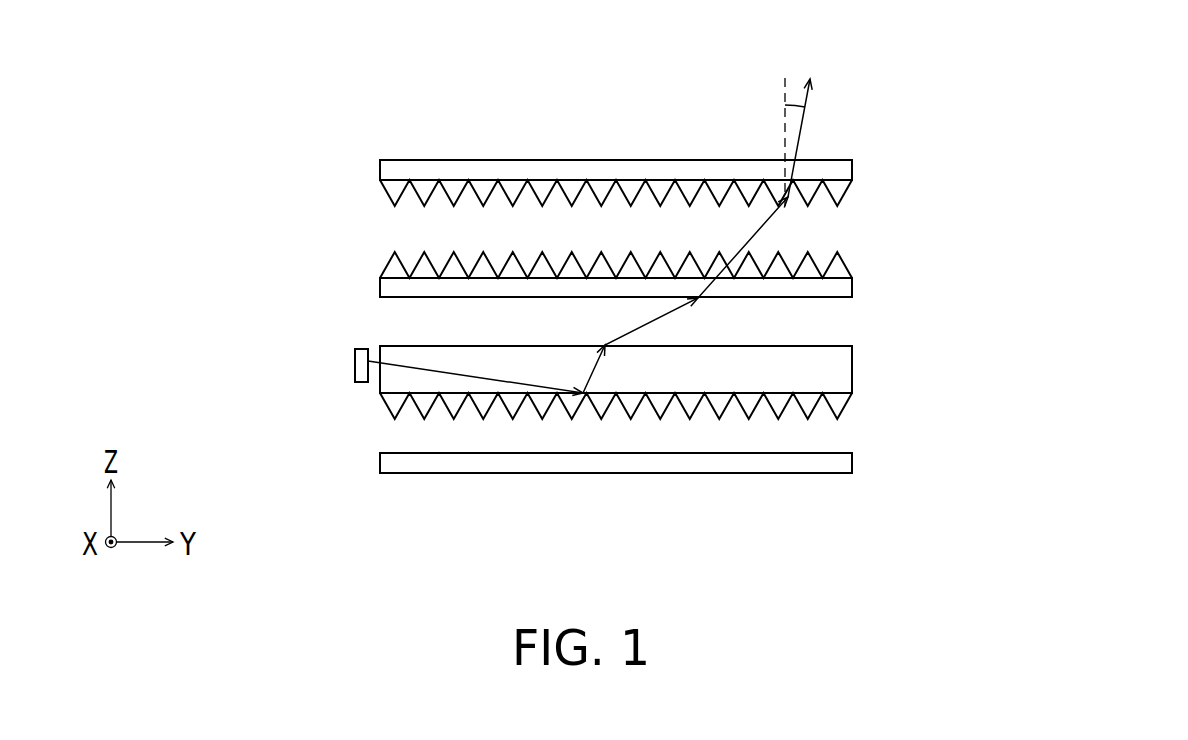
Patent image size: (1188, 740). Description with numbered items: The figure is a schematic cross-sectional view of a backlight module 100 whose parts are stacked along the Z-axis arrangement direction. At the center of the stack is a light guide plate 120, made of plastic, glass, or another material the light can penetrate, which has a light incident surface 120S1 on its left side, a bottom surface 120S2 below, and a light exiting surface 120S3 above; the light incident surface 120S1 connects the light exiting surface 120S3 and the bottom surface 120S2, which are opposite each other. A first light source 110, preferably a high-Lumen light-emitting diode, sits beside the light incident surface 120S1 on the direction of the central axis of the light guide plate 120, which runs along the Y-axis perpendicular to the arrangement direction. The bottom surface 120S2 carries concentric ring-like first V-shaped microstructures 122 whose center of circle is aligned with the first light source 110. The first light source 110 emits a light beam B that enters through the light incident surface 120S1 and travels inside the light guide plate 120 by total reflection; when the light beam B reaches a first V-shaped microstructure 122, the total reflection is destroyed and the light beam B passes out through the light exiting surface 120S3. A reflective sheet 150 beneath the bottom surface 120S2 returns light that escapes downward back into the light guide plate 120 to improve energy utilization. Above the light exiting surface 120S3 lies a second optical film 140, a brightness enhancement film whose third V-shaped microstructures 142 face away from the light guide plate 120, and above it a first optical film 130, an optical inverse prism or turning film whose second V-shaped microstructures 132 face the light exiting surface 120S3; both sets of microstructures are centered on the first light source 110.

The backlight module 100 is at (1155, 566).
The first light source 110 is at (353, 362).
The light guide plate 120 is at (843, 365).
The light incident surface 120S1 is at (375, 345).
The bottom surface 120S2 is at (423, 397).
The light exiting surface 120S3 is at (825, 345).
The first V-shaped microstructures 122 is at (840, 403).
The first optical film 130 is at (845, 170).
The second V-shaped microstructures 132 is at (840, 187).
The second optical film 140 is at (845, 290).
The third V-shaped microstructures 142 is at (840, 270).
The reflective sheet 150 is at (843, 462).
The light beam B is at (530, 393).